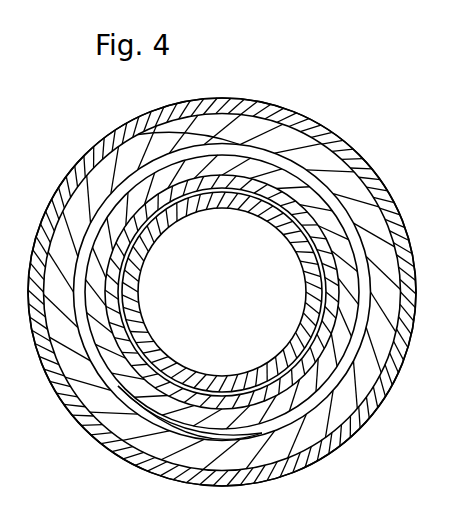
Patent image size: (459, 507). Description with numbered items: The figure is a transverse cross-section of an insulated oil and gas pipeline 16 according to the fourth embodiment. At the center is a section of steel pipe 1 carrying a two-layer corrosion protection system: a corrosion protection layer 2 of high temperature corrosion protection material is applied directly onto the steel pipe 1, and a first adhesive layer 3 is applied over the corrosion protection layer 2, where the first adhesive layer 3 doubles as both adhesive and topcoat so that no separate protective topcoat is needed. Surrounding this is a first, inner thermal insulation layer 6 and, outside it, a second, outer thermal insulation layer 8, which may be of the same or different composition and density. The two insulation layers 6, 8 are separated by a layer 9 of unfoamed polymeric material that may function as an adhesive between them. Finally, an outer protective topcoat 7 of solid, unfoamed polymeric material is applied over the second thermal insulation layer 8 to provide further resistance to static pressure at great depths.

The steel pipe 1 is at (180, 210).
The corrosion protection layer 2 is at (282, 223).
The first adhesive layer 3 is at (260, 397).
The first thermal insulation layer 6 is at (128, 378).
The outer protective topcoat 7 is at (349, 153).
The second thermal insulation layer 8 is at (118, 163).
The unfoamed polymeric layer 9 is at (320, 393).
The insulated oil and gas pipeline 16 is at (323, 108).